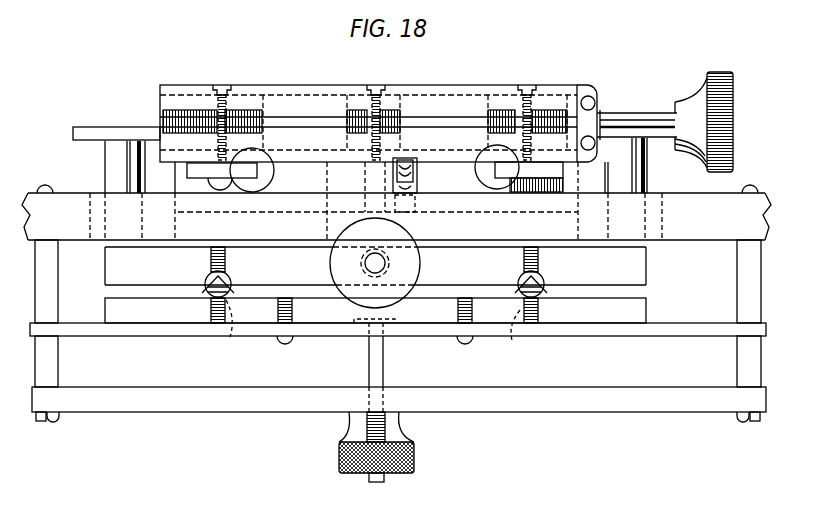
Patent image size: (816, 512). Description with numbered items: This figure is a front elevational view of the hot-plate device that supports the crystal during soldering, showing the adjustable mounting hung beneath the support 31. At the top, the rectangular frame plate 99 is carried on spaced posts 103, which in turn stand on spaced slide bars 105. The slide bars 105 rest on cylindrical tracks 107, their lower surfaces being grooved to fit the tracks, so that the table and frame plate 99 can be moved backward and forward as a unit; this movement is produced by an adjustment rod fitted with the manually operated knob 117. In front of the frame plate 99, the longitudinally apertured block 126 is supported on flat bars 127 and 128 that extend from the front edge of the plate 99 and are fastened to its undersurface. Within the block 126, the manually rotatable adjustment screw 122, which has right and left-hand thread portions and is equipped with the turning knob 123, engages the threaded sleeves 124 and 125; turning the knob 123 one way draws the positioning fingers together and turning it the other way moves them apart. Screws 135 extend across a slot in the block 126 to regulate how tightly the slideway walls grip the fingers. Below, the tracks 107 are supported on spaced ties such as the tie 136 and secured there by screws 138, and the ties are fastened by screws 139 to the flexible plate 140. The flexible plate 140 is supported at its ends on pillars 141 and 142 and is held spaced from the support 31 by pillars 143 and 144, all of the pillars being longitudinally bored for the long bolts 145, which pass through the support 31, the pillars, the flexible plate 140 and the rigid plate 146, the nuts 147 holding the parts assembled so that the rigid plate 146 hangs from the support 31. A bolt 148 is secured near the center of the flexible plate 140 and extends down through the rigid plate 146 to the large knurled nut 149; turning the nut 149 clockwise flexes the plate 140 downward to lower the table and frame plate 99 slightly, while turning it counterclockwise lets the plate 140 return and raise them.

The support 31 is at (73, 232).
The frame plate 99 is at (78, 132).
The posts 103 is at (110, 160).
The slide bars 105 is at (646, 266).
The tracks 107 is at (207, 285).
The knob 117 is at (413, 266).
The adjustment screw 122 is at (632, 117).
The turning knob 123 is at (718, 77).
The threaded sleeve 124 is at (453, 108).
The threaded sleeve 125 is at (314, 108).
The block 126 is at (552, 87).
The flat bar 127 is at (555, 179).
The flat bar 128 is at (200, 179).
The screws 135 is at (226, 85).
The tie 136 is at (646, 312).
The screws 138 is at (229, 337).
The screws 139 is at (293, 346).
The flexible plate 140 is at (607, 337).
The pillar 141 is at (58, 365).
The pillar 142 is at (743, 359).
The pillar 143 is at (52, 312).
The pillar 144 is at (745, 286).
The long bolts 145 is at (45, 187).
The rigid plate 146 is at (522, 404).
The nuts 147 is at (62, 419).
The bolt 148 is at (385, 363).
The knurled nut 149 is at (415, 455).